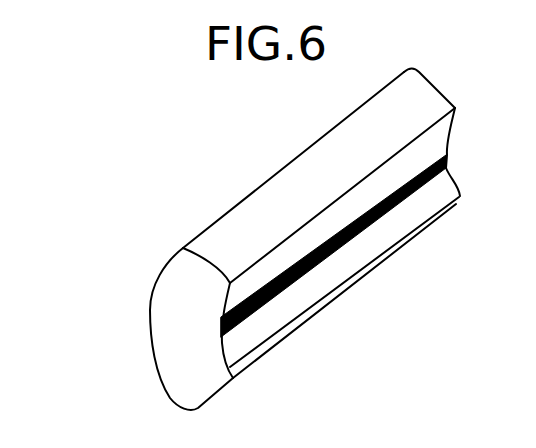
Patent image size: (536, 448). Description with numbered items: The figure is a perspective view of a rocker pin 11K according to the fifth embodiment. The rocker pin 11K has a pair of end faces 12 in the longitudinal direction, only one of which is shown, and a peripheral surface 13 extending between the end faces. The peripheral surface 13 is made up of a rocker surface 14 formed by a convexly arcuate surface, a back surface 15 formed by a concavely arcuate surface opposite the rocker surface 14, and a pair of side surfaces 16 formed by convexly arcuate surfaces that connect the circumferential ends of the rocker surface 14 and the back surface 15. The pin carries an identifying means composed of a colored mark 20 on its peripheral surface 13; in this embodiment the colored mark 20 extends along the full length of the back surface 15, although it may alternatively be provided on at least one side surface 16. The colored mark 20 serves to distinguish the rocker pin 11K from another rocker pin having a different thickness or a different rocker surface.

The rocker pin 11K is at (132, 333).
The end face 12 is at (180, 374).
The peripheral surface 13 is at (414, 97).
The rocker surface 14 is at (153, 287).
The back surface 15 is at (409, 212).
The side surface 16 is at (252, 194).
The colored mark 20 is at (354, 243).